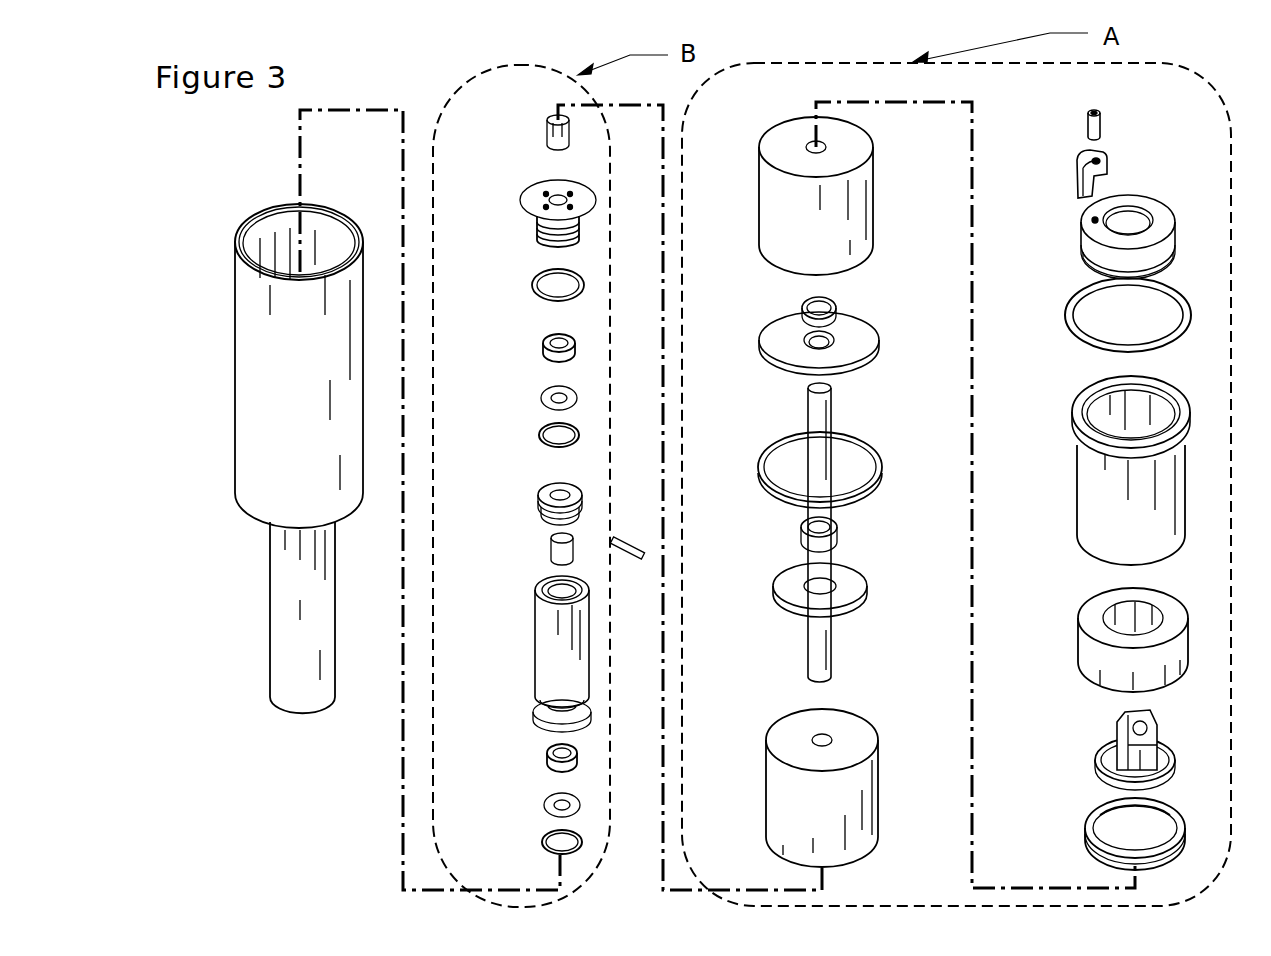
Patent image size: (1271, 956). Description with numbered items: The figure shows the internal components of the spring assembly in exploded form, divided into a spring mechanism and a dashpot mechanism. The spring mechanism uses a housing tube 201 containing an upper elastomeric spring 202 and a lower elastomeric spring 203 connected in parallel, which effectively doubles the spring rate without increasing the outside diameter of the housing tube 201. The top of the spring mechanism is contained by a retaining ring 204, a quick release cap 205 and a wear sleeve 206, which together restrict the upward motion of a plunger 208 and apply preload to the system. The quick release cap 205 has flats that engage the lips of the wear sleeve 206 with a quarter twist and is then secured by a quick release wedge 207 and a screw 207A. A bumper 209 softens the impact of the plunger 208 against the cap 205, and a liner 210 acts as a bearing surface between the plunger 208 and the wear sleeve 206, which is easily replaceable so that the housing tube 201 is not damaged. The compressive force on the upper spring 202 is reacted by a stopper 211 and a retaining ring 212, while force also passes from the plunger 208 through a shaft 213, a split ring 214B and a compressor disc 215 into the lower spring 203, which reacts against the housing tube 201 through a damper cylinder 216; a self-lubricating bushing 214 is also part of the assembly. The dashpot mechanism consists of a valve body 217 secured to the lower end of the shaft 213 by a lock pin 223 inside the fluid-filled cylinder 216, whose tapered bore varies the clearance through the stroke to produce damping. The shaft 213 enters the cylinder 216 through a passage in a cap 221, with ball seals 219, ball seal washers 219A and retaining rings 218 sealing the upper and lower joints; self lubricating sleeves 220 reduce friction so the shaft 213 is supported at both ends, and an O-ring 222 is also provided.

The housing tube 201 is at (290, 702).
The upper elastomeric spring 202 is at (766, 185).
The lower elastomeric spring 203 is at (770, 722).
The retaining ring 204 is at (1099, 301).
The quick release cap 205 is at (1083, 210).
The wear sleeve 206 is at (1098, 470).
The quick release wedge 207 is at (1073, 165).
The screw 207A is at (1085, 115).
The plunger 208 is at (1094, 742).
The bumper 209 is at (1080, 605).
The liner 210 is at (1100, 822).
The stopper 211 is at (770, 345).
The retaining ring 212 is at (772, 440).
The shaft 213 is at (808, 390).
The self-lubricating bushing 214 is at (802, 308).
The split ring 214B is at (805, 520).
The compressor disc 215 is at (782, 572).
The damper cylinder 216 is at (535, 630).
The valve body 217 is at (538, 495).
The retaining ring 218 is at (540, 435).
The ball seal 219 is at (543, 343).
The ball seal washer 219A is at (541, 398).
The self lubricating sleeve 220 is at (548, 128).
The cap 221 is at (532, 192).
The O-ring 222 is at (533, 282).
The lock pin 223 is at (624, 535).